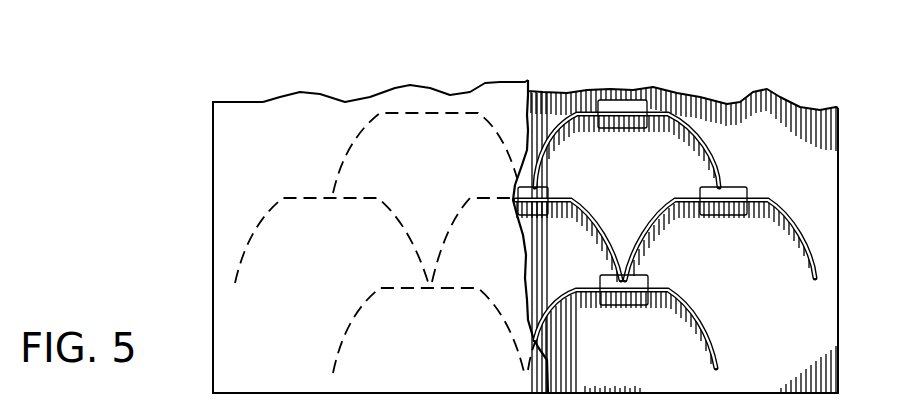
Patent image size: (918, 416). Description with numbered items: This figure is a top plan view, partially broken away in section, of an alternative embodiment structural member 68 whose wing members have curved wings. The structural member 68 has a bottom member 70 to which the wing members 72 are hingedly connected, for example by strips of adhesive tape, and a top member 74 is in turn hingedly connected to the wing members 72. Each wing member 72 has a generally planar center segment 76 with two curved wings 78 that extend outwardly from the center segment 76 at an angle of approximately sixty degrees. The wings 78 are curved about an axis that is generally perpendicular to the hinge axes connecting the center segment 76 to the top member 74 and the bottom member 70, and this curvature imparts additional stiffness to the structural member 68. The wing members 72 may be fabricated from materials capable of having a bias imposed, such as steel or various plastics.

The structural member 68 is at (633, 75).
The bottom member 70 is at (777, 96).
The wing members 72 is at (394, 213).
The top member 74 is at (326, 97).
The center segment 76 is at (588, 110).
The curved wings 78 is at (532, 187).